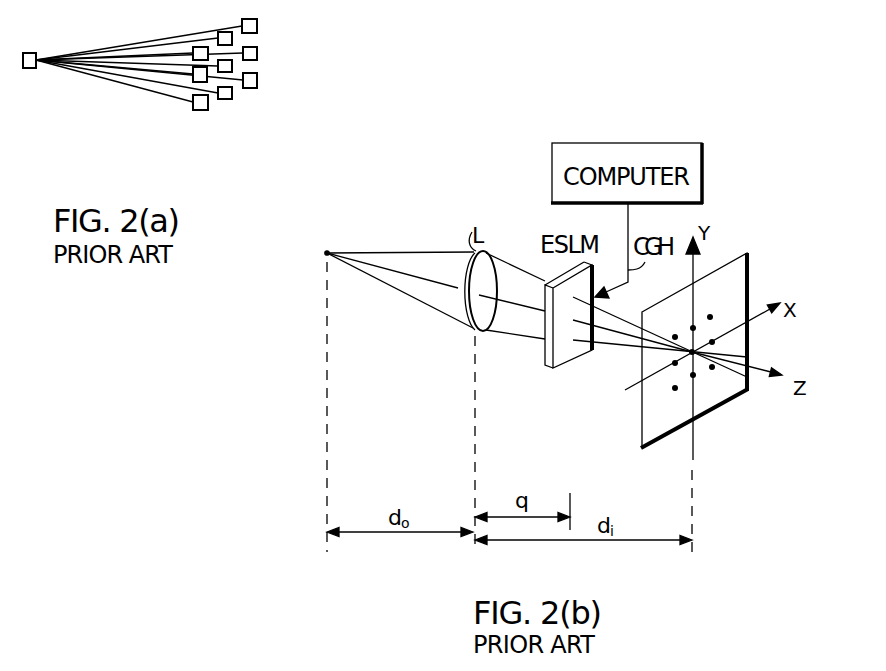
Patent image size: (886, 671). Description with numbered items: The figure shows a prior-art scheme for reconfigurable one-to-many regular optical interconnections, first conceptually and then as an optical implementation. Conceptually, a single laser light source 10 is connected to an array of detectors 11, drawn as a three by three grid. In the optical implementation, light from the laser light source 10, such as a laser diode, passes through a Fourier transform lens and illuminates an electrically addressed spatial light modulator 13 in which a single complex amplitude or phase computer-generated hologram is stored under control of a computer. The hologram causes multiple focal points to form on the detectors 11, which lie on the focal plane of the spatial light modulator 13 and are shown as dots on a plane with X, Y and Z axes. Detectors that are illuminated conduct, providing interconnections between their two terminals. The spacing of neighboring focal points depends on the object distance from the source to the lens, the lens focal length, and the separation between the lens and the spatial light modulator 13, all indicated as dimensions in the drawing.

In FIG. 2A, the laser light source 10 is at (28, 68).
In FIG. 2B, the laser light source 10 is at (305, 277).
In FIG. 2A, the detectors 11 is at (235, 126).
In FIG. 2B, the detectors 11 is at (713, 396).
In FIG. 2B, the electrically addressed spatial light modulator (ESLM) 13 is at (545, 348).